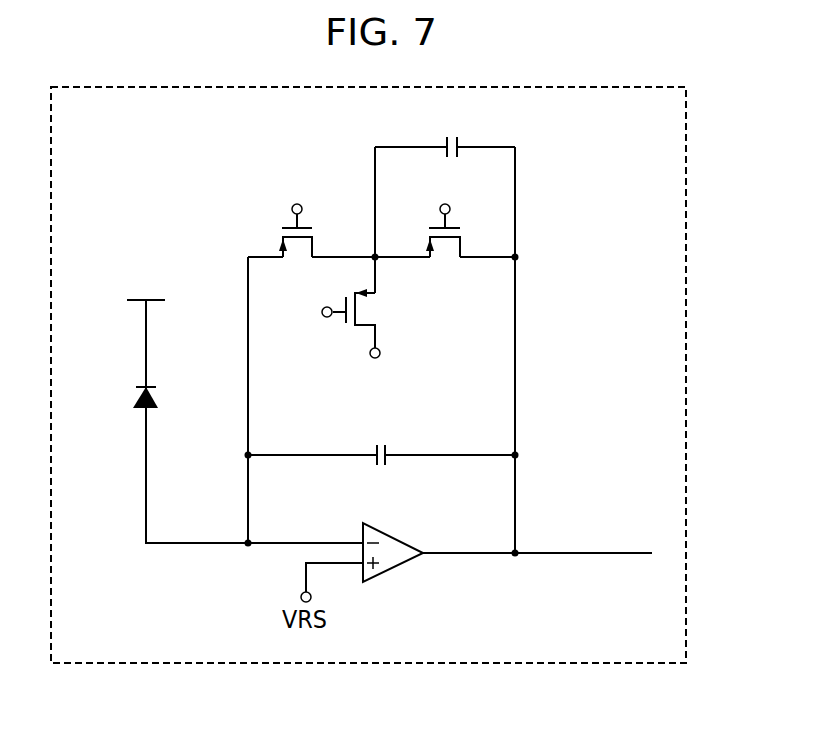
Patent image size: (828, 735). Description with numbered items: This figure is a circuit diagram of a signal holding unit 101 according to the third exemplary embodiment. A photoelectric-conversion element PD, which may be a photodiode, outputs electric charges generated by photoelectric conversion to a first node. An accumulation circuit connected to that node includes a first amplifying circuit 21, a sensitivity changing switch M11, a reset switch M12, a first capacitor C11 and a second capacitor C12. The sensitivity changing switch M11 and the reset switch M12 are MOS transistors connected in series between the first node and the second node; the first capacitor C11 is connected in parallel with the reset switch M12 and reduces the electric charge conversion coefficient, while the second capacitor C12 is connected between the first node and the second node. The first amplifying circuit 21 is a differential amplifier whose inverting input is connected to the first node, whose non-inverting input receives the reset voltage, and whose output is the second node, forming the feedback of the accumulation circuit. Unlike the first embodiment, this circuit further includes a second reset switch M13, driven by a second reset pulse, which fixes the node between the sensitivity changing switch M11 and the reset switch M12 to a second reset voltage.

The signal holding unit 101 is at (686, 282).
The first capacitor C11 is at (453, 135).
The second capacitor C12 is at (383, 442).
The sensitivity changing switch M11 is at (282, 233).
The reset switch M12 is at (462, 233).
The second reset switch M13 is at (368, 310).
The photoelectric-conversion element PD is at (161, 356).
The first amplifying circuit 21 is at (388, 572).